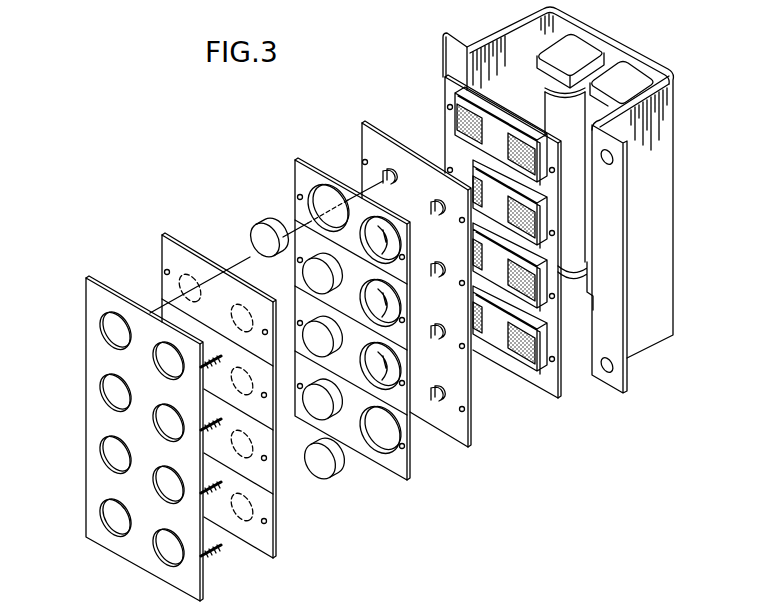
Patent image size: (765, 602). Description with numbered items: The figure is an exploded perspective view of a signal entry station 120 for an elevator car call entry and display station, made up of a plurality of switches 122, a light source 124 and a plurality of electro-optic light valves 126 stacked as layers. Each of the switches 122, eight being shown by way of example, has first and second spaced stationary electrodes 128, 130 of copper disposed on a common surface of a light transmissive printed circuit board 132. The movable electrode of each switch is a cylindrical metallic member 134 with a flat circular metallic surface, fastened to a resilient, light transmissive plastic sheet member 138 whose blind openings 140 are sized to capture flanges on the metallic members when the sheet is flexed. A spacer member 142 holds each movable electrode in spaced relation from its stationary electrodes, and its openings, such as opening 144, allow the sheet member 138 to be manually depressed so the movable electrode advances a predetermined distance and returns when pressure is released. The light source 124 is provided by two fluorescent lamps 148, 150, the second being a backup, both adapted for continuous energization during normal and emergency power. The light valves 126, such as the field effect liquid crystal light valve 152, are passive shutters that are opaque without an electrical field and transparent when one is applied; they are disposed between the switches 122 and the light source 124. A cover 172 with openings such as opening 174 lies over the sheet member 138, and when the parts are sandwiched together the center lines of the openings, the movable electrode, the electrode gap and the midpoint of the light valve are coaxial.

The signal entry station 120 is at (292, 121).
The switches 122 is at (481, 449).
The light source 124 is at (620, 43).
The electro-optic light valves 126 is at (520, 254).
The electrode 128 is at (436, 210).
The electrode 130 is at (447, 203).
The printed circuit board 132 is at (391, 278).
The metallic member 134 is at (258, 228).
The sheet member 138 is at (189, 386).
The blind openings 140 is at (196, 260).
The spacer member 142 is at (326, 312).
The opening 144 is at (280, 163).
The fluorescent lamp 148 is at (582, 47).
The fluorescent lamp 150 is at (633, 78).
The light valve 152 is at (525, 150).
The cover 172 is at (111, 433).
The opening 174 is at (126, 327).